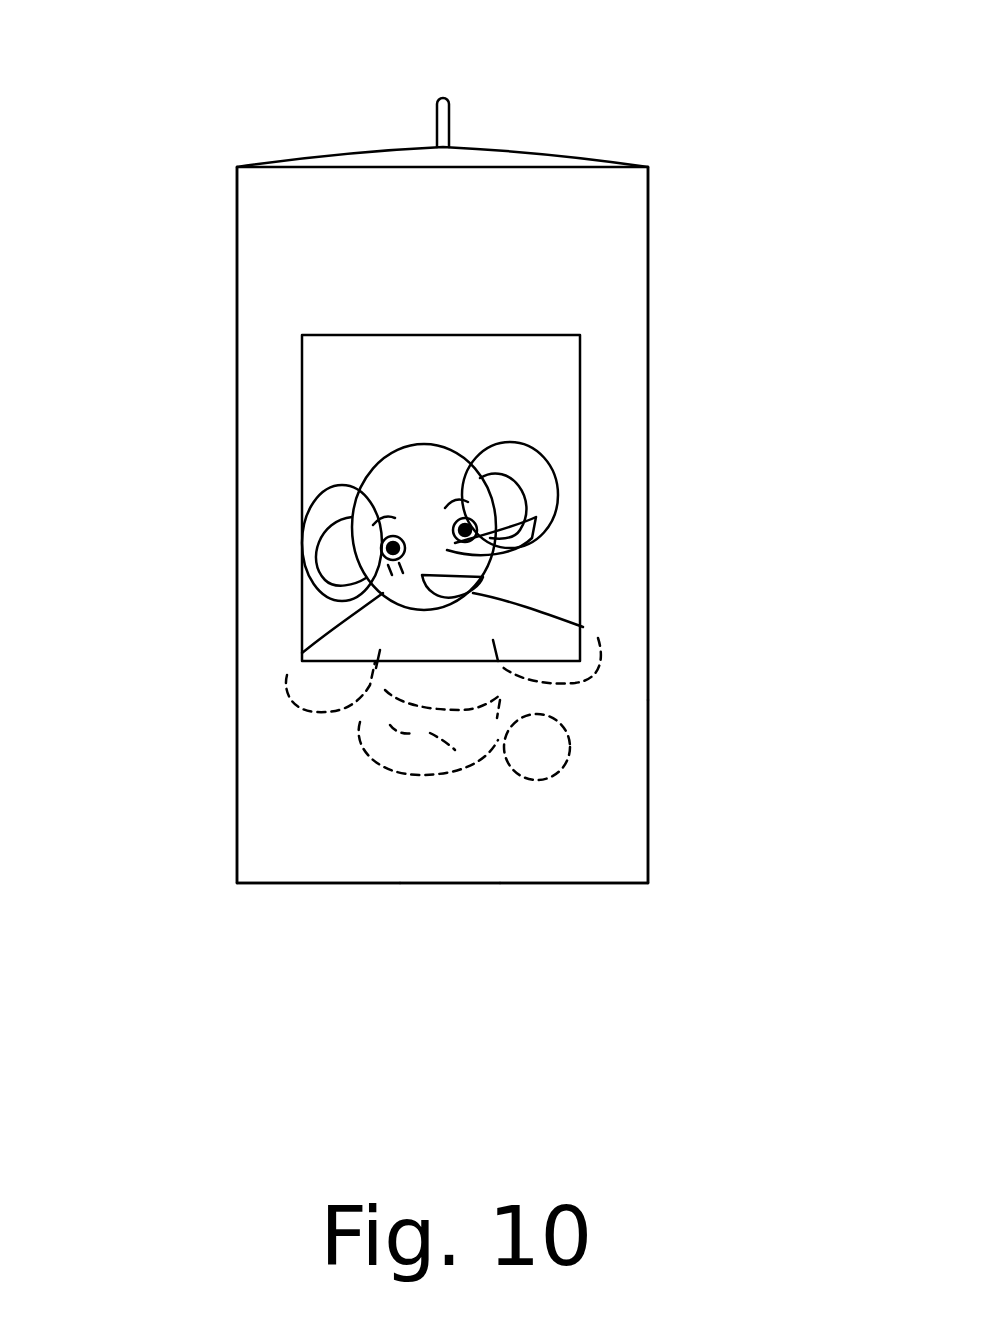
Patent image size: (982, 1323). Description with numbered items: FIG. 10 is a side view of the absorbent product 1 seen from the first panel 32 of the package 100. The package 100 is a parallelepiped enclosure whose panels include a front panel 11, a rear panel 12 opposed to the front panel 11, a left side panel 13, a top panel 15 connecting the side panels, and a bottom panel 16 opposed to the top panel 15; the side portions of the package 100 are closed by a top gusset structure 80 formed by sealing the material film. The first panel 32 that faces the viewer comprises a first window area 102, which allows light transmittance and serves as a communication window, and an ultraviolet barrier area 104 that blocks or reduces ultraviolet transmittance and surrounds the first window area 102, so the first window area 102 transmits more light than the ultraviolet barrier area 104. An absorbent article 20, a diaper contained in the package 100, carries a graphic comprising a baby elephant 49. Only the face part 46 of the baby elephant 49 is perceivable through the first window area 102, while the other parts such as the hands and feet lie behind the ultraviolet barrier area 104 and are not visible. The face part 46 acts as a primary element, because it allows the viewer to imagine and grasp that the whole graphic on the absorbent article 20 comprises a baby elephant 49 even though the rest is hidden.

The toy device 1 is at (693, 143).
The package 100 is at (648, 267).
The first window area 102 is at (550, 388).
The ultraviolet barrier area 104 is at (542, 853).
The top gusset structure 80 is at (453, 153).
The top panel 15 is at (550, 153).
The absorbent article 20 is at (435, 587).
The face part 46 is at (373, 487).
The baby elephant 49 is at (527, 623).
The front panel 11 is at (648, 685).
The rear panel 12 is at (235, 683).
The first panel 32 is at (615, 782).
The left side panel 13 is at (343, 853).
The bottom panel 16 is at (422, 883).